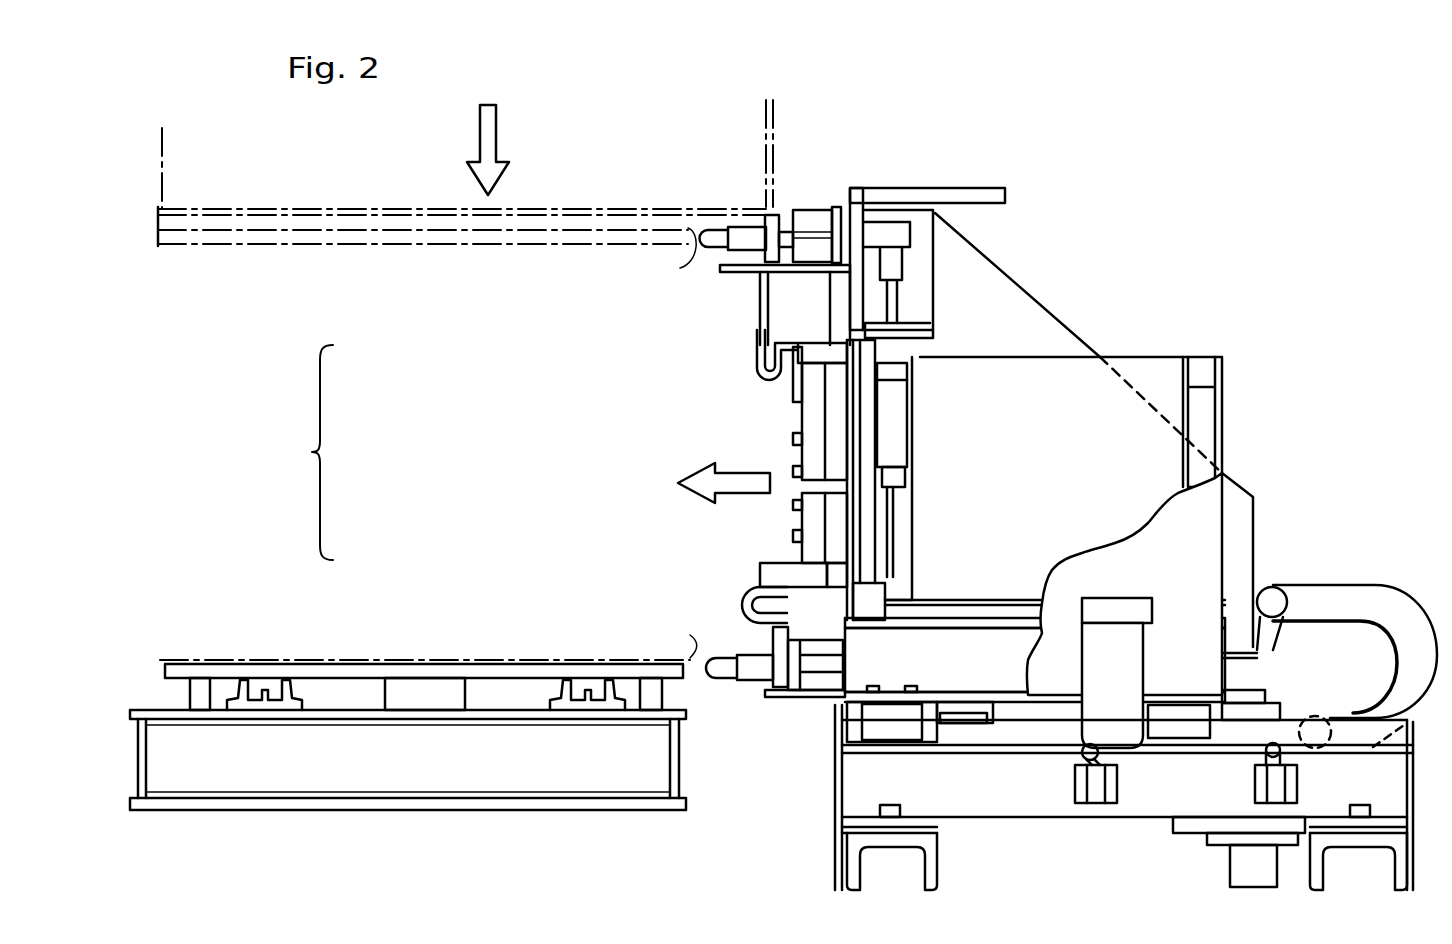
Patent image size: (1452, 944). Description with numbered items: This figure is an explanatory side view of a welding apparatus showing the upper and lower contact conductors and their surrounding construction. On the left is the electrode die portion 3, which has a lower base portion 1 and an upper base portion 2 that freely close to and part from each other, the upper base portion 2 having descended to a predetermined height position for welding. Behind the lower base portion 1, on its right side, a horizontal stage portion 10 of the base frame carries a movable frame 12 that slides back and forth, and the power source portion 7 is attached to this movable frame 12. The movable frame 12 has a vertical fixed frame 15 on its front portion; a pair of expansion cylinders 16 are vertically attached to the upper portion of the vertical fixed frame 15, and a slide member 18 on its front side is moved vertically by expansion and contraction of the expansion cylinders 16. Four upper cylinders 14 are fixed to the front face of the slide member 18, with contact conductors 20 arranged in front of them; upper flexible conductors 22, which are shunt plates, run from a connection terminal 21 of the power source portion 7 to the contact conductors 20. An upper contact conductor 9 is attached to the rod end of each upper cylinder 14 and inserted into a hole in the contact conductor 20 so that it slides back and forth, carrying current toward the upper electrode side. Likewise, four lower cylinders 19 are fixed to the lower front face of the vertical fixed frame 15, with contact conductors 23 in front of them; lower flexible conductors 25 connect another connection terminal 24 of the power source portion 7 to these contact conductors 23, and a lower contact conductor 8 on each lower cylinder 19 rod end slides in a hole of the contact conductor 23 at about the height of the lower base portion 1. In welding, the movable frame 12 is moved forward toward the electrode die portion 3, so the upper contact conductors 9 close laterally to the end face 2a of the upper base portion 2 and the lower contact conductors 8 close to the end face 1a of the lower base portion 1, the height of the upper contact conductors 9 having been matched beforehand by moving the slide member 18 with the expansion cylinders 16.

The lower base portion 1 is at (420, 652).
The end face of the lower base portion 1a is at (690, 648).
The upper base portion 2 is at (420, 250).
The end face of the upper base portion 2a is at (690, 252).
The electrode die portion 3 is at (312, 452).
The power source portion 7 is at (1148, 355).
The lower contact conductor 8 is at (712, 677).
The upper contact conductor 9 is at (705, 243).
The horizontal stage portion 10 is at (1023, 807).
The movable frame 12 is at (973, 677).
The upper cylinder 14 is at (810, 217).
The vertical fixed frame 15 is at (833, 293).
The expansion cylinder 16 is at (913, 432).
The slide member 18 is at (890, 223).
The lower cylinder 19 is at (818, 683).
The contact conductor 20 is at (782, 207).
The connection terminal 21 is at (783, 383).
The upper flexible conductor 22 is at (757, 350).
The contact conductor 23 is at (780, 687).
The connection terminal 24 is at (782, 568).
The lower flexible conductor 25 is at (740, 603).